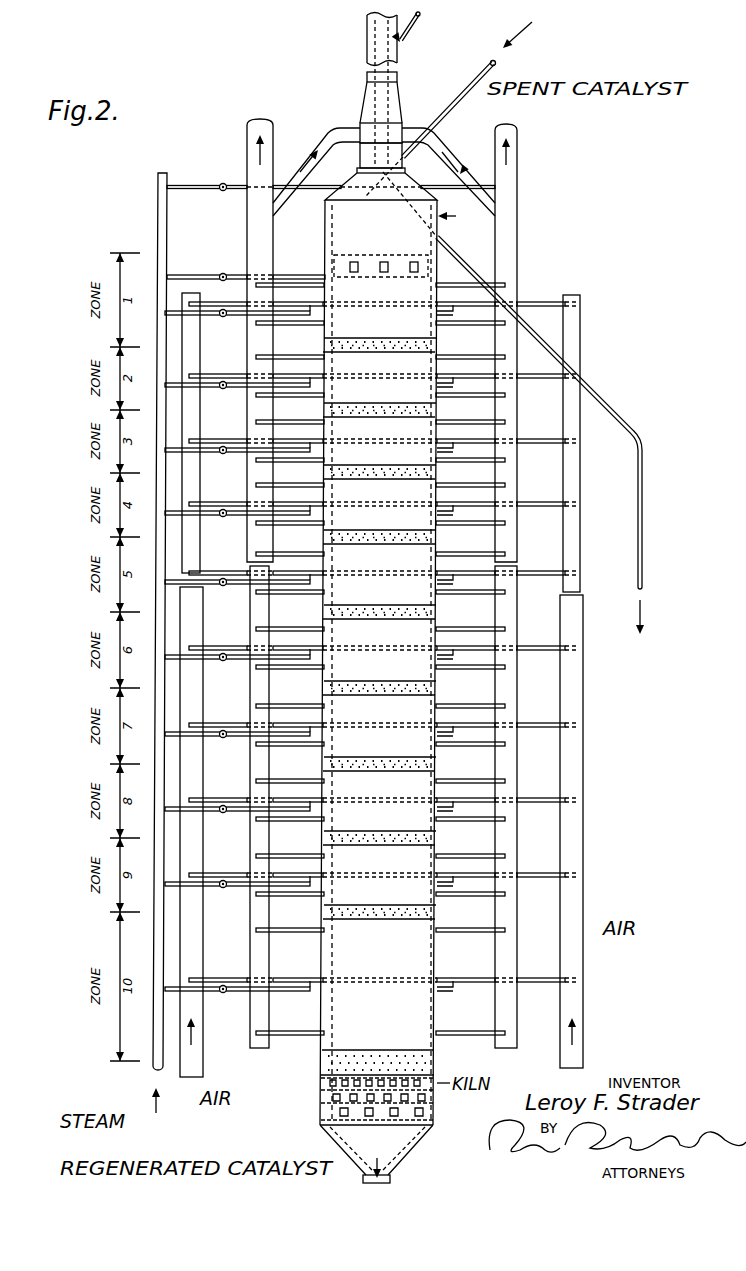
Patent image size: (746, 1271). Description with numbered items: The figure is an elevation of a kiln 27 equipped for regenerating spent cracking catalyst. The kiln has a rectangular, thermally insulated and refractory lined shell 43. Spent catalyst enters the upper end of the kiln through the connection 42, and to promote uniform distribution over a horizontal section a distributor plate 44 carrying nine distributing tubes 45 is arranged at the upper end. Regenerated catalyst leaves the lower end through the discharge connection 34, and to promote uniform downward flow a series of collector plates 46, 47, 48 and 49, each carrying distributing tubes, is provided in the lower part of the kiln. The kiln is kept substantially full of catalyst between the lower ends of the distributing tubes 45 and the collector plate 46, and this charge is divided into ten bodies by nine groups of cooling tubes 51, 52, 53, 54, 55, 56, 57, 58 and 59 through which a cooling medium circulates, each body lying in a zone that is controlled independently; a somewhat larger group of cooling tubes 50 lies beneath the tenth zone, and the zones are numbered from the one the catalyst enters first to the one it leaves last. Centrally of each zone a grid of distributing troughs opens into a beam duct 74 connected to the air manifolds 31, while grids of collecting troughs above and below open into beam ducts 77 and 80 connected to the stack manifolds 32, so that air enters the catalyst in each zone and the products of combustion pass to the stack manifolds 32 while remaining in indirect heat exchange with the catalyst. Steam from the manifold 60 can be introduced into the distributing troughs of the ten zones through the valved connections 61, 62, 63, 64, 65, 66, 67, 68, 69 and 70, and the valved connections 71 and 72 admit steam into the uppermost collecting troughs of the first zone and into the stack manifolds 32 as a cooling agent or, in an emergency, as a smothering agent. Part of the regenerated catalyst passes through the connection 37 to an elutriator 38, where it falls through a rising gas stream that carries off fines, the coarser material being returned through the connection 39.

The kiln 27 is at (458, 216).
The air manifolds 31 is at (190, 293).
The stack manifolds 32 is at (247, 136).
The discharge connection 34 is at (392, 1180).
The connection 37 is at (420, 22).
The elutriator 38 is at (365, 97).
The connection 39 is at (643, 537).
The connection 42 is at (470, 108).
The shell 43 is at (325, 237).
The distributor plate 44 is at (370, 256).
The distributing tubes 45 is at (340, 256).
The collector plate 46 is at (322, 1083).
The collector plate 47 is at (432, 1105).
The collector plate 48 is at (322, 1110).
The collector plate 49 is at (425, 1140).
The cooling tubes 50 is at (412, 1059).
The cooling tubes 51 is at (437, 345).
The cooling tubes 52 is at (437, 410).
The cooling tubes 53 is at (437, 472).
The cooling tubes 54 is at (437, 537).
The cooling tubes 55 is at (437, 612).
The cooling tubes 56 is at (437, 688).
The cooling tubes 57 is at (437, 764).
The cooling tubes 58 is at (437, 838).
The cooling tubes 59 is at (437, 912).
The steam manifold 60 is at (157, 193).
The valved connection 61 is at (219, 316).
The valved connection 62 is at (219, 388).
The valved connection 63 is at (219, 453).
The valved connection 64 is at (219, 516).
The valved connection 65 is at (219, 585).
The valved connection 66 is at (219, 660).
The valved connection 67 is at (219, 737).
The valved connection 68 is at (219, 812).
The valved connection 69 is at (219, 887).
The valved connection 70 is at (219, 992).
The valved connection 71 is at (235, 275).
The valved connection 72 is at (238, 192).
The beam duct 74 is at (543, 302).
The beam duct 77 is at (470, 283).
The beam duct 80 is at (484, 330).